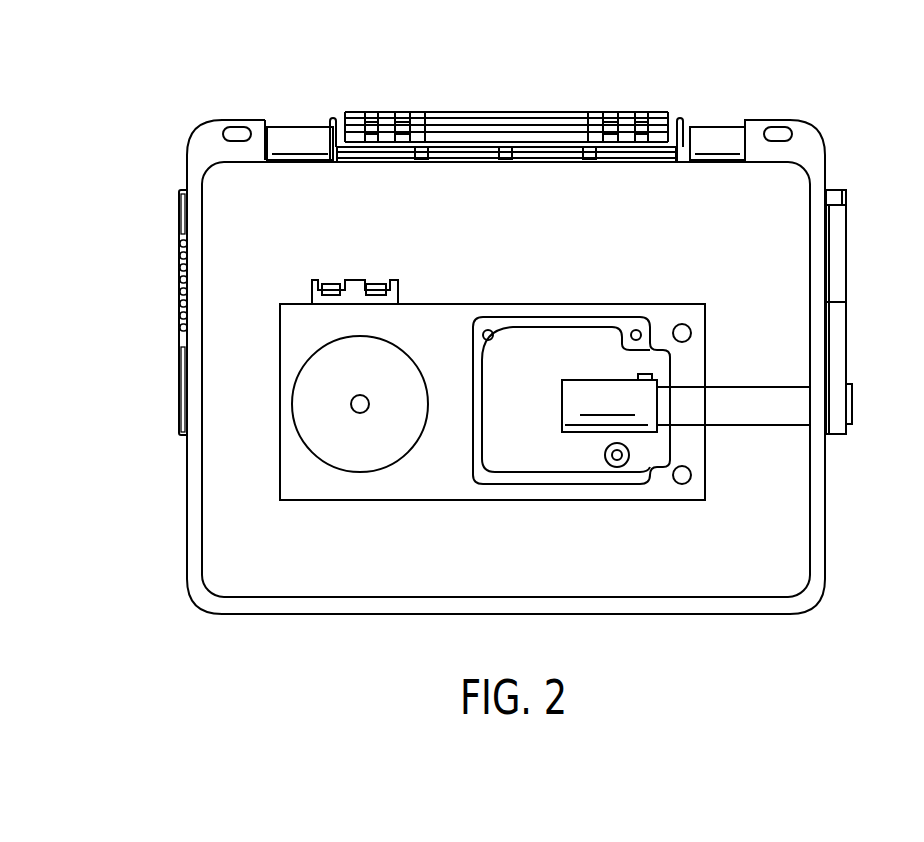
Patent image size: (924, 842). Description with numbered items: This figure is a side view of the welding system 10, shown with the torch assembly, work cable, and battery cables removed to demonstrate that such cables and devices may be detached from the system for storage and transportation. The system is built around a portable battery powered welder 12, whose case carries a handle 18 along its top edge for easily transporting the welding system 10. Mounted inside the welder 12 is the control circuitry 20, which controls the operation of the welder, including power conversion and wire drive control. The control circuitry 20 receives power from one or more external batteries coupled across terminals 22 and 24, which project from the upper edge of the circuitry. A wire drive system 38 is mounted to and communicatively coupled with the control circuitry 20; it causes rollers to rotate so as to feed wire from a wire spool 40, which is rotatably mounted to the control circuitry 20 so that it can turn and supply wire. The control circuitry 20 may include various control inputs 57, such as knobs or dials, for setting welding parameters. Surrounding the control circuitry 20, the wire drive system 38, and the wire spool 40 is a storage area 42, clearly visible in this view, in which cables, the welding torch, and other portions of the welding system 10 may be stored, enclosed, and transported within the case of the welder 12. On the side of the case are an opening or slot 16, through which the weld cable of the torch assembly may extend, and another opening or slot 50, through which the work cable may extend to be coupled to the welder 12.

The welding system 10 is at (68, 117).
The portable battery powered welder 12 is at (827, 170).
The opening or slot 16 is at (852, 393).
The handle 18 is at (513, 115).
The control circuitry 20 is at (440, 472).
The terminal 22 is at (332, 283).
The terminal 24 is at (378, 283).
The wire drive system 38 is at (531, 445).
The wire spool 40 is at (345, 450).
The storage area 42 is at (745, 520).
The opening or slot 50 is at (850, 425).
The control inputs 57 is at (682, 346).